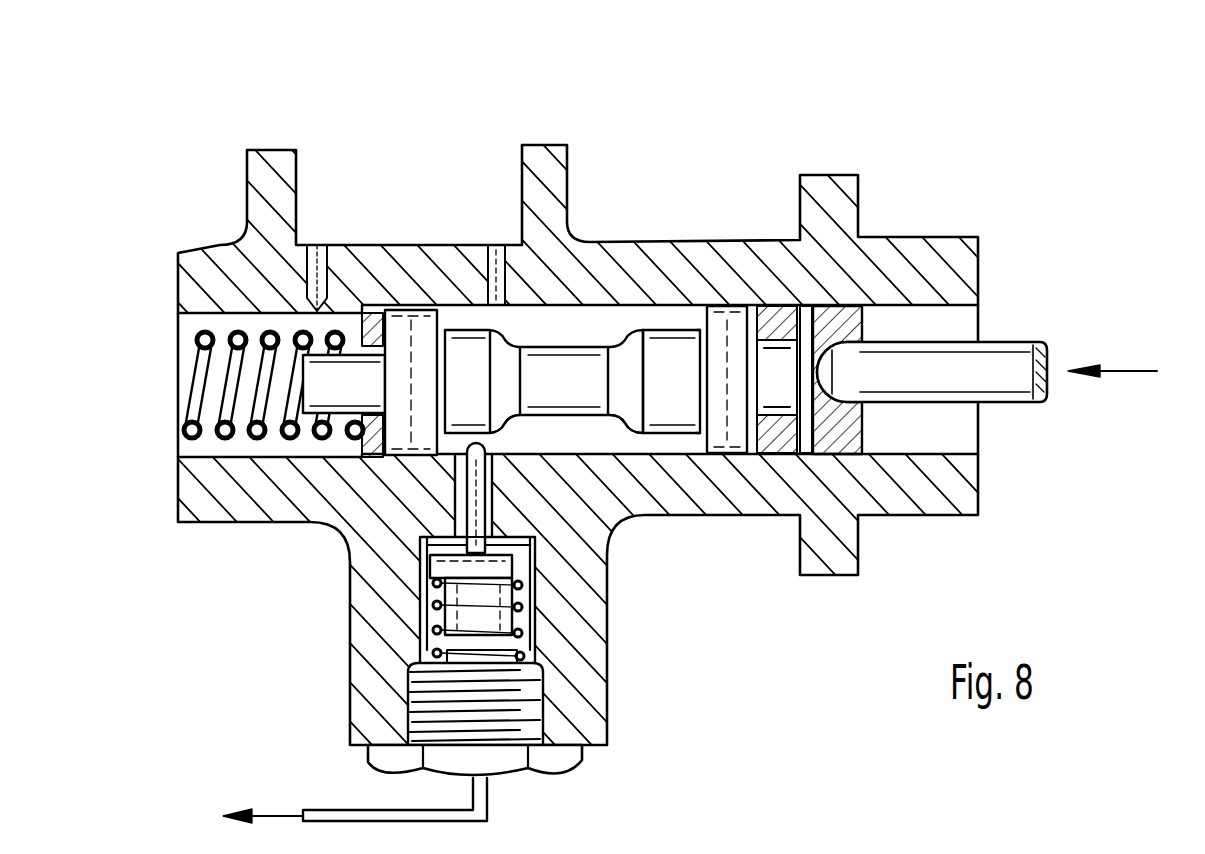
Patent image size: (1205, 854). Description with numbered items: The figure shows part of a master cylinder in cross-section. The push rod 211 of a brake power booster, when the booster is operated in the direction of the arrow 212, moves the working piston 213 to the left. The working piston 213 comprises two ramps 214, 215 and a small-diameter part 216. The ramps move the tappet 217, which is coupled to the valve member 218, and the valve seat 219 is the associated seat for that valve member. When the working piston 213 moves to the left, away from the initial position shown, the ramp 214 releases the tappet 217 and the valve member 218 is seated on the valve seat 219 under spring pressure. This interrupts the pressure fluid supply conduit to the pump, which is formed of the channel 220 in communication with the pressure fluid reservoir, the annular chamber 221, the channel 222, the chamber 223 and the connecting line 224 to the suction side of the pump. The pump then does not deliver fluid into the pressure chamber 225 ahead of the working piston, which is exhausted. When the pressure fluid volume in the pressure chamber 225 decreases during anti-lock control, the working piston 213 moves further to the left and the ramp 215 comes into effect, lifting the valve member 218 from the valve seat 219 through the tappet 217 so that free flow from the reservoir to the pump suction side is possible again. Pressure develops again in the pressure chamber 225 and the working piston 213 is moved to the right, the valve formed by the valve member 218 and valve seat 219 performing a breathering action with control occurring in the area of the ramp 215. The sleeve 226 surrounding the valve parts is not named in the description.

The push rod 211 is at (1022, 360).
The arrow 212 is at (1118, 371).
The working piston 213 is at (737, 317).
The ramp 214 is at (508, 425).
The ramp 215 is at (627, 413).
The small-diameter part 216 is at (590, 367).
The tappet 217 is at (470, 492).
The valve member 218 is at (543, 567).
The valve seat 219 is at (430, 565).
The channel 220 is at (490, 245).
The annular chamber 221 is at (672, 317).
The channel 222 is at (433, 538).
The chamber 223 is at (420, 642).
The connecting line 224 is at (340, 810).
The pressure chamber 225 is at (187, 345).
The insert sleeve 226 is at (537, 610).